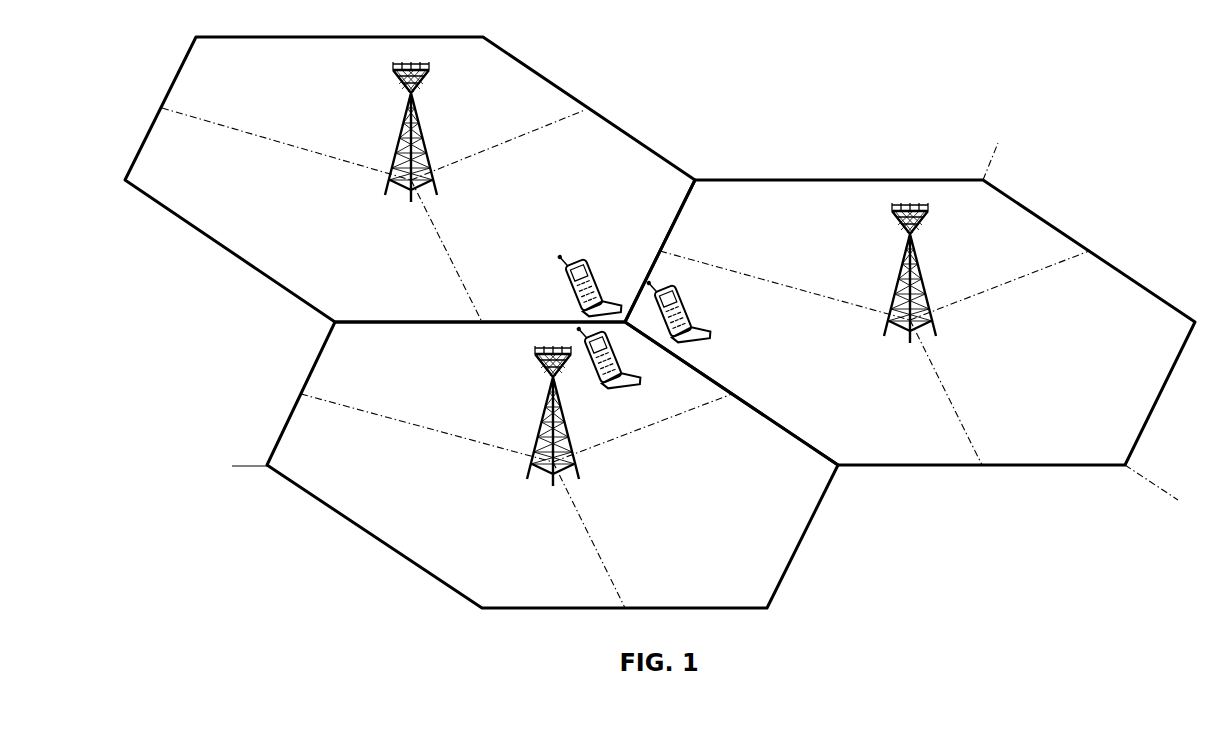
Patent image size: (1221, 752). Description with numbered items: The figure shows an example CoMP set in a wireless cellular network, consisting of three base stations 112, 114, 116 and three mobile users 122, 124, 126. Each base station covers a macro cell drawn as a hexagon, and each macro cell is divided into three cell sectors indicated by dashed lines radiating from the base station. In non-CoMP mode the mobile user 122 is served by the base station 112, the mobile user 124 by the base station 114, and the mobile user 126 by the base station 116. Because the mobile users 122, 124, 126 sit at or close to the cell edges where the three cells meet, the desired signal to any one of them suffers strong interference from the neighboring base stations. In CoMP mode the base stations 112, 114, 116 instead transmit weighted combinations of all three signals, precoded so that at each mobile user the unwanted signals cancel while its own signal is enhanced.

The base station 112 is at (427, 132).
The base station 114 is at (894, 273).
The base station 116 is at (538, 416).
The mobile user 122 is at (571, 283).
The mobile user 124 is at (688, 309).
The mobile user 126 is at (631, 355).